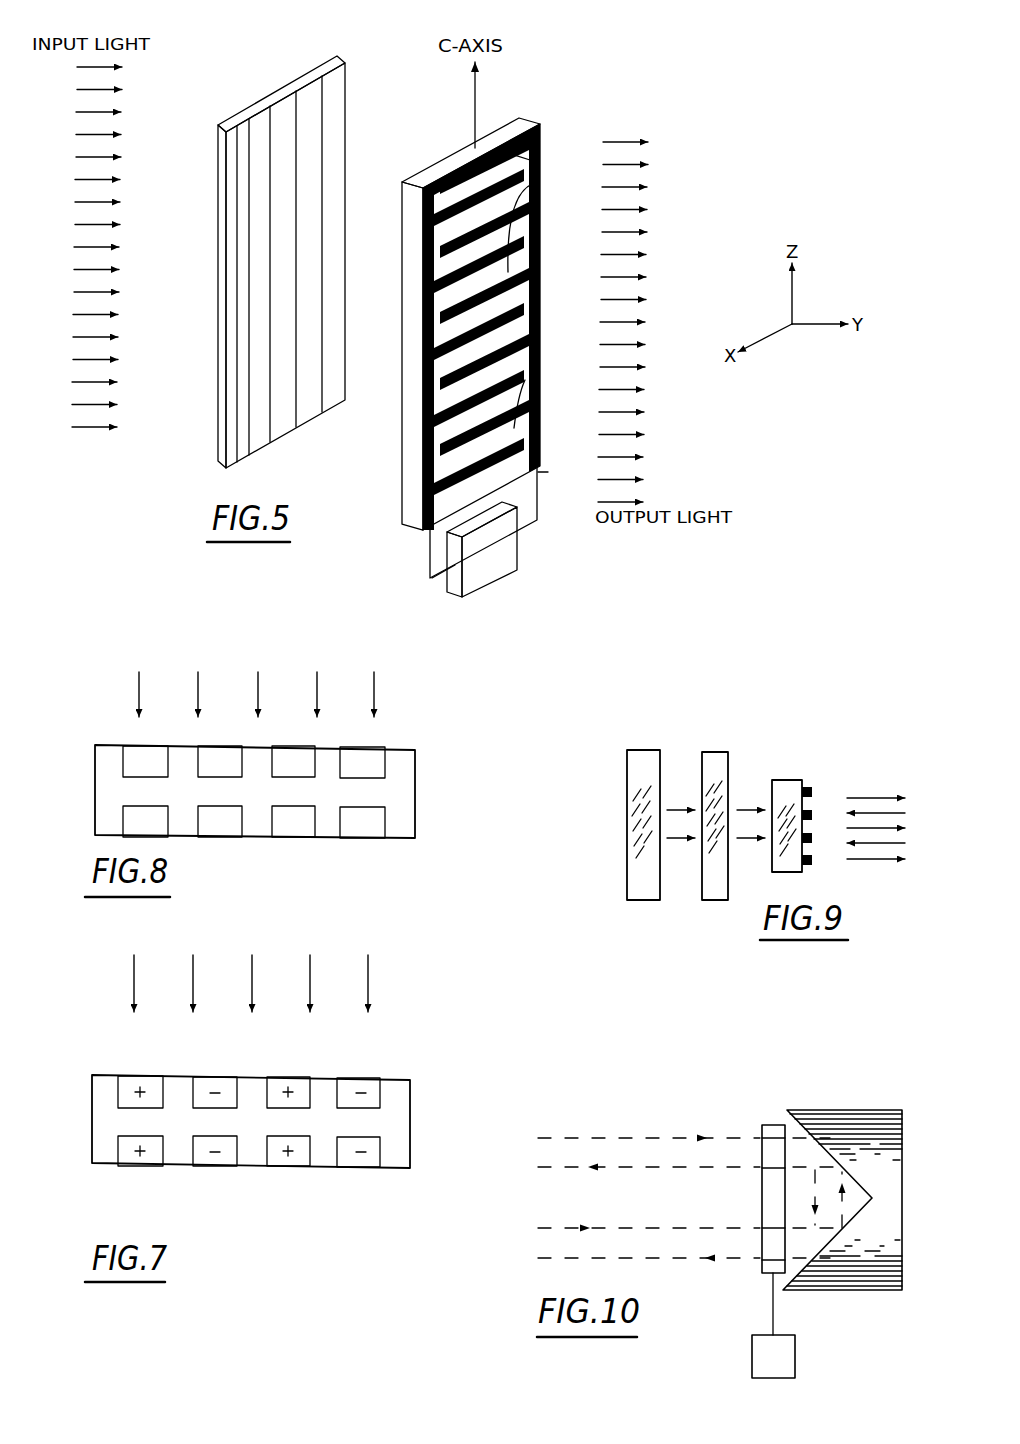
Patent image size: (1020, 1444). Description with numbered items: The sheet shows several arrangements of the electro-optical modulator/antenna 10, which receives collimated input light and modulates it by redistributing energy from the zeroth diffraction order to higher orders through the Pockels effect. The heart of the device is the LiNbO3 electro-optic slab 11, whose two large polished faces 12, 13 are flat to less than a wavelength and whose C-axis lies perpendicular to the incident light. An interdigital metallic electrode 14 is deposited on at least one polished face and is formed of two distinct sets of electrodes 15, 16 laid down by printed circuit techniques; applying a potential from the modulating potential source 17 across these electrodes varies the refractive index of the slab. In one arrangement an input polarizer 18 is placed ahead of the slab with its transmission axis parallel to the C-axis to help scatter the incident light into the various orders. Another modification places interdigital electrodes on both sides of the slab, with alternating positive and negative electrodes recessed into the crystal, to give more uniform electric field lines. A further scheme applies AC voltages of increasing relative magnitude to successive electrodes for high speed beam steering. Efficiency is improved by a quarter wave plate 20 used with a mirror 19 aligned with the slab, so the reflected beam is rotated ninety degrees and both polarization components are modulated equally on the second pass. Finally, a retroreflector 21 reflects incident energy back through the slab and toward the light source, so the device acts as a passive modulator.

In FIG. 5, the electro-optical modulator/antenna 10 is at (475, 304).
In FIG. 10, the electro-optical modulator/antenna 10 is at (757, 1199).
In FIG. 5, the electro-optic slab 11 is at (430, 181).
In FIG. 8, the electro-optic slab 11 is at (417, 825).
In FIG. 7, the electro-optic slab 11 is at (412, 1160).
In FIG. 9, the electro-optic slab 11 is at (787, 780).
In FIG. 10, the electro-optic slab 11 is at (765, 1273).
In FIG. 5, the polished face 12 is at (398, 240).
In FIG. 5, the polished face 13 is at (505, 170).
In FIG. 5, the interdigital metallic electrode 14 is at (552, 265).
In FIG. 7, the interdigital metallic electrode 14 is at (282, 1057).
In FIG. 5, the first set of electrodes 15 is at (502, 330).
In FIG. 7, the first set of electrodes 15 is at (230, 1083).
In FIG. 9, the first set of electrodes 15 is at (810, 790).
In FIG. 5, the second set of electrodes 16 is at (495, 298).
In FIG. 7, the second set of electrodes 16 is at (277, 1082).
In FIG. 9, the second set of electrodes 16 is at (810, 815).
In FIG. 5, the modulating potential source 17 is at (497, 566).
In FIG. 10, the modulating potential source 17 is at (773, 1325).
In FIG. 5, the input polarizer 18 is at (282, 90).
In FIG. 9, the mirror 19 is at (642, 750).
In FIG. 9, the quarter wave plate 20 is at (705, 752).
In FIG. 10, the retroreflector 21 is at (835, 1292).